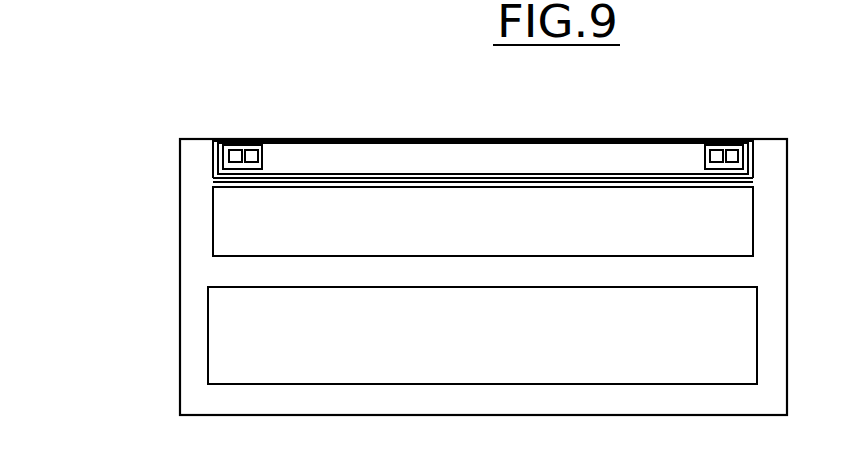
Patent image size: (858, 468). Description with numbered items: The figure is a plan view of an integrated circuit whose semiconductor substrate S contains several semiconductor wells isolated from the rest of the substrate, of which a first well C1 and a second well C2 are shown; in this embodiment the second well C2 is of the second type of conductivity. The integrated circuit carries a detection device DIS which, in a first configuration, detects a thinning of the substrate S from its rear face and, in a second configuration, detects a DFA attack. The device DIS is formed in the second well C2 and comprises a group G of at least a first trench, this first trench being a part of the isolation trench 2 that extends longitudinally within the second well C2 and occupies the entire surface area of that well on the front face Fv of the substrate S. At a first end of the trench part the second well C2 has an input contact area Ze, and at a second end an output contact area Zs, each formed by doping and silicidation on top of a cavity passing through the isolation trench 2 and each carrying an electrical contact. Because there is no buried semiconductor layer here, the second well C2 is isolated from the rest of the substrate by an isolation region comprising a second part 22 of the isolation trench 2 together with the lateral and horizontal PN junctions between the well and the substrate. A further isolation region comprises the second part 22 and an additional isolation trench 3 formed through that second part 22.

The detection device DIS is at (180, 148).
The isolation trench 2 is at (775, 185).
The second part of the isolation trench 22 is at (593, 148).
The group of at least a first trench G is at (478, 150).
The second well C2 is at (300, 150).
The first well C1 is at (432, 200).
The input contact area Ze is at (243, 172).
The output contact area Zs is at (742, 155).
The additional isolation trench 3 is at (715, 180).
The front face Fv is at (365, 342).
The semiconductor substrate S is at (510, 342).